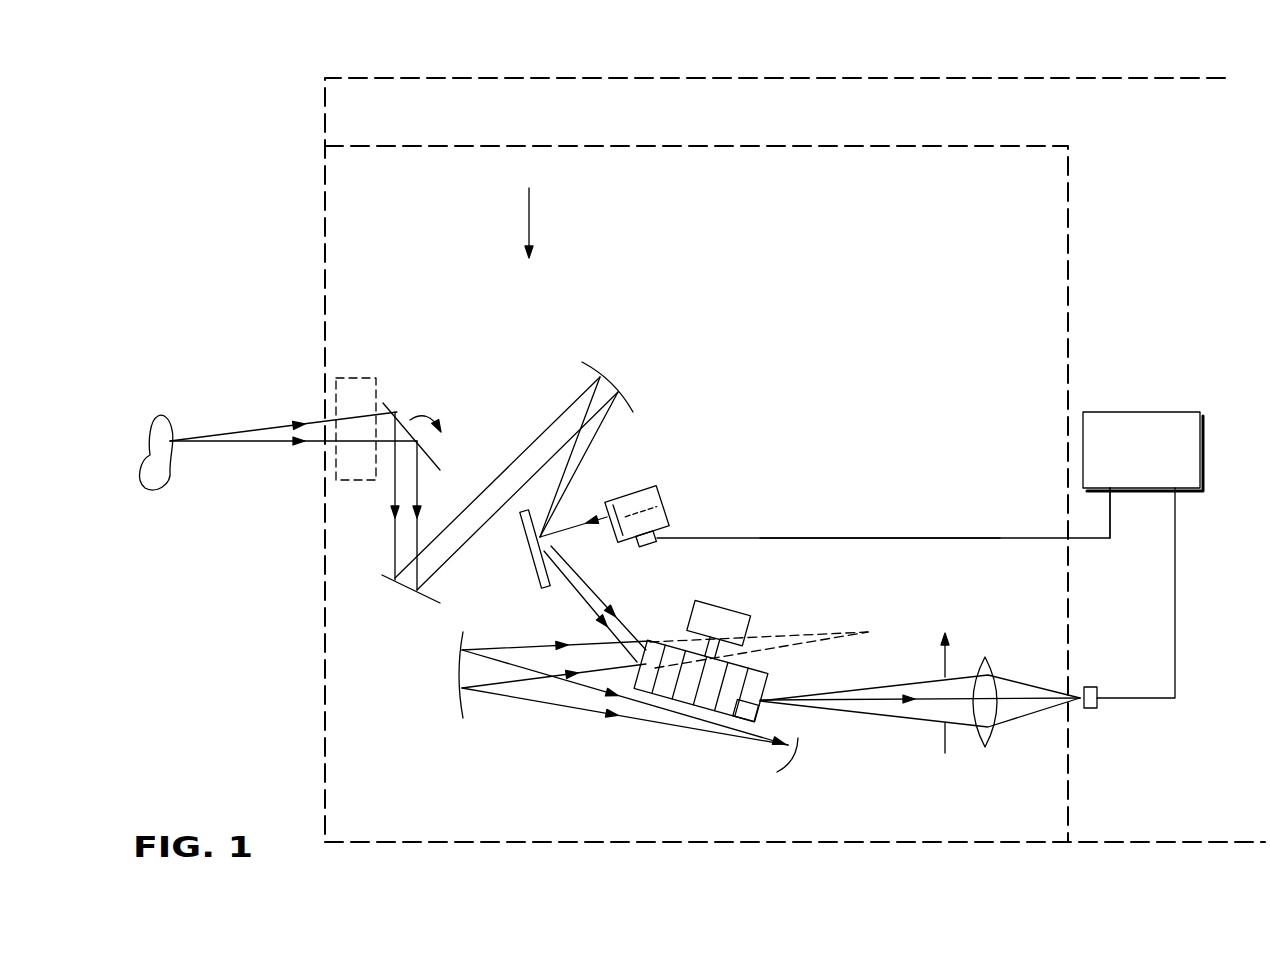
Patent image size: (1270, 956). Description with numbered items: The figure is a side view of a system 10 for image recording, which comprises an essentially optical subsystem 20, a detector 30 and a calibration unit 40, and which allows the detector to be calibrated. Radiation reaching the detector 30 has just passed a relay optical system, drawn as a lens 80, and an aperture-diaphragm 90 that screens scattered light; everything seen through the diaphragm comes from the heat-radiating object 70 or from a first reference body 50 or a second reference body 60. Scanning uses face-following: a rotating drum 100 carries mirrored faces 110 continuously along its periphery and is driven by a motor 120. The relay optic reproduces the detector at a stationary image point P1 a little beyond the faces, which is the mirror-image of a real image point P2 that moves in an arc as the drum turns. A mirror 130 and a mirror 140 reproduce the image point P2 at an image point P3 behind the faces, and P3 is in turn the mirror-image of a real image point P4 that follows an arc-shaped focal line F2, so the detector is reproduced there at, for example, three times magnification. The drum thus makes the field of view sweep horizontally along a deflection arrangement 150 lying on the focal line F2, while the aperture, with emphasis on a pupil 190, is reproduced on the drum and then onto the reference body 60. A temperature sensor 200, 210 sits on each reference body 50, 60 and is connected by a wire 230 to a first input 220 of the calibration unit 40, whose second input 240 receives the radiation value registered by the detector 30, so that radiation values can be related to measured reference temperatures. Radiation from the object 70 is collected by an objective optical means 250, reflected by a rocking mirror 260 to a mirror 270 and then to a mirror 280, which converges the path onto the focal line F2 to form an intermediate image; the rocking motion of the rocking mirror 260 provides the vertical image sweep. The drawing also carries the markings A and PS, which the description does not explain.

The system for image recording 10 is at (745, 62).
The optical subsystem 20 is at (683, 147).
The detector 30 is at (1098, 690).
The calibration unit 40 is at (1140, 412).
The first reference body 50 is at (665, 513).
The second reference body 60 is at (662, 502).
The heat-radiating object 70 is at (167, 418).
The relay optical system 80 is at (1018, 633).
The aperture-diaphragm 90 is at (943, 677).
The rotating drum 100 is at (920, 689).
The mirrored faces 110 is at (643, 698).
The motor 120 is at (722, 607).
The mirror 130 is at (762, 730).
The mirror 140 is at (462, 703).
The deflection arrangement 150 is at (528, 543).
The pupil 190 is at (648, 638).
The temperature sensor 200 is at (883, 531).
The temperature sensor 210 is at (883, 531).
The first input 220 is at (1093, 487).
The wire 230 is at (832, 538).
The second input 240 is at (1183, 493).
The objective optical means 250 is at (343, 378).
The rocking mirror 260 is at (397, 406).
The mirror 270 is at (402, 587).
The mirror 280 is at (605, 380).
The scan direction A is at (543, 222).
The point source PS is at (172, 436).
The image point P1 is at (705, 720).
The real image point P2 is at (780, 732).
The image point P3 is at (868, 632).
The focal line F2 is at (641, 462).
The real image point P4 is at (546, 537).